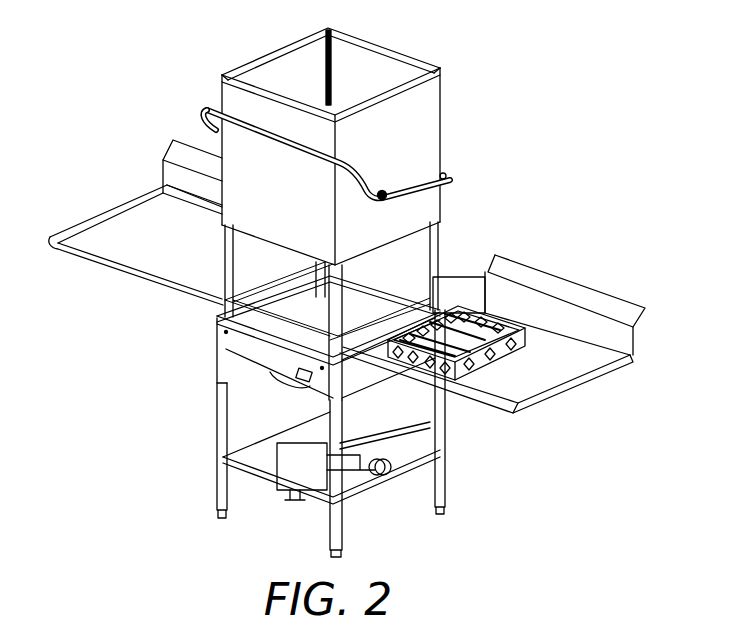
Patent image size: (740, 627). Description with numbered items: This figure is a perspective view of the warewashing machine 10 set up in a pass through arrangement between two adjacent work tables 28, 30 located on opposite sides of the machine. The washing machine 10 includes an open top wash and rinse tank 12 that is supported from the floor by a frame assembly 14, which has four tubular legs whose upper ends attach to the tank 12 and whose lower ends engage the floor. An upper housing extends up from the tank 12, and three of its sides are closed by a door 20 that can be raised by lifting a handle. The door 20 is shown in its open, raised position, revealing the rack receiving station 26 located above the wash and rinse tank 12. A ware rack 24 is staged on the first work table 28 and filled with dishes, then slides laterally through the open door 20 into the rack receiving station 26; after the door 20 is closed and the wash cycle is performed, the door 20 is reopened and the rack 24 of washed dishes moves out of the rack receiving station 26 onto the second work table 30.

The warewashing machine 10 is at (575, 66).
The wash and rinse tank 12 is at (233, 338).
The frame assembly 14 is at (222, 427).
The door 20 is at (423, 142).
The ware rack 24 is at (493, 363).
The rack receiving station 26 is at (362, 318).
The first work table 28 is at (558, 358).
The second work table 30 is at (137, 237).